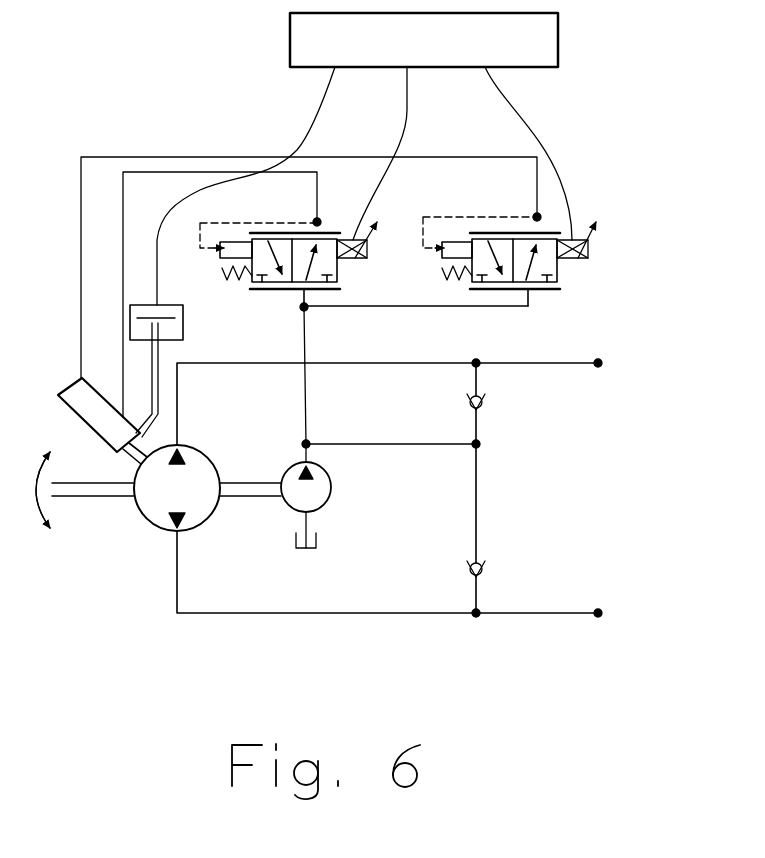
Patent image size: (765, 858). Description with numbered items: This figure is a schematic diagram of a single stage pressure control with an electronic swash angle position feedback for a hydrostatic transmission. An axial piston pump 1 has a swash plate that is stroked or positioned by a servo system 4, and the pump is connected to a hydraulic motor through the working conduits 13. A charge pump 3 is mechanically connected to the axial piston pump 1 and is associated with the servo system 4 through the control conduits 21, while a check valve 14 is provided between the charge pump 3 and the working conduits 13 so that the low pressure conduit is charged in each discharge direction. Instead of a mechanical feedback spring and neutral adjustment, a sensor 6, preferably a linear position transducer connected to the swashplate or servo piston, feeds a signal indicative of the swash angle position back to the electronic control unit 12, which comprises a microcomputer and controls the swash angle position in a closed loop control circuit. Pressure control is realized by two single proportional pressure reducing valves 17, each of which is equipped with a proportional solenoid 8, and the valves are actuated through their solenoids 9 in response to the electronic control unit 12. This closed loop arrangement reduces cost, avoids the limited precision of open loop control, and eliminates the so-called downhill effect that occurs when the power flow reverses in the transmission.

The axial piston pump 1 is at (158, 530).
The charge pump 3 is at (320, 508).
The servo system 4 is at (72, 378).
The sensor 6 is at (183, 323).
The proportional solenoid 8 is at (367, 257).
The solenoids 9 is at (222, 250).
The electronic control unit 12 is at (558, 52).
The working conduits 13 is at (556, 612).
The check valve 14 is at (483, 404).
The proportional pressure reducing valves 17 is at (463, 235).
The control conduits 21 is at (145, 172).